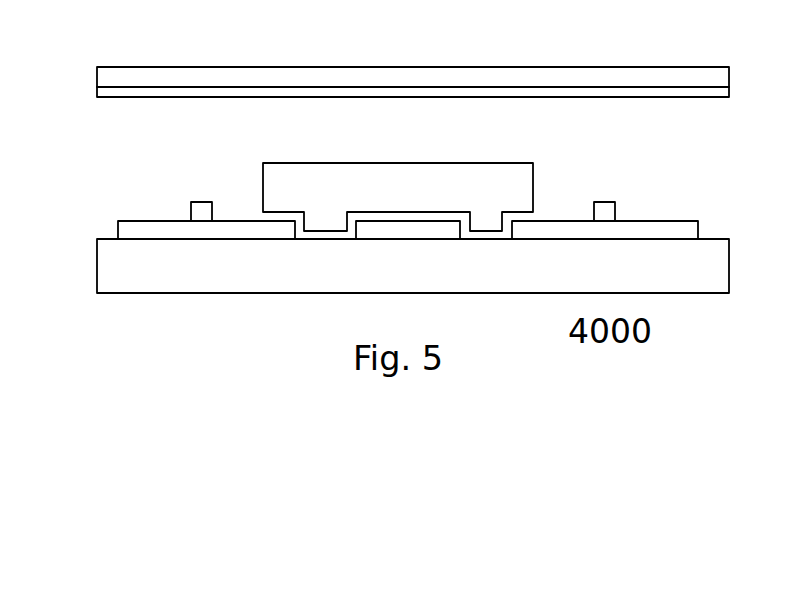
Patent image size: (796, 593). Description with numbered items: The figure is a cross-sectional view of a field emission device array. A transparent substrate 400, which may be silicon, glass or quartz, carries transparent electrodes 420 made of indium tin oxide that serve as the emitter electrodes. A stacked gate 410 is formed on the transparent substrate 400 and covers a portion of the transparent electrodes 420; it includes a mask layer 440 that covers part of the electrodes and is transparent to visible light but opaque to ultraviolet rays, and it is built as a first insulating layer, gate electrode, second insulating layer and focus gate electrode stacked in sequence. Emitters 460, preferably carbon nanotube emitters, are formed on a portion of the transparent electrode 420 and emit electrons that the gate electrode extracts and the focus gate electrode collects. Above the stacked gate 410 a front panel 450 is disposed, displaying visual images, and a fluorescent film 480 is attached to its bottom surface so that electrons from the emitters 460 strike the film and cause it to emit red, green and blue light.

The transparent substrate 400 is at (413, 266).
The stacked gate 410 is at (398, 197).
The transparent electrodes 420 is at (688, 230).
The mask layer 440 is at (518, 209).
The front panel 450 is at (698, 77).
The emitters 460 is at (192, 208).
The fluorescent film 480 is at (698, 88).